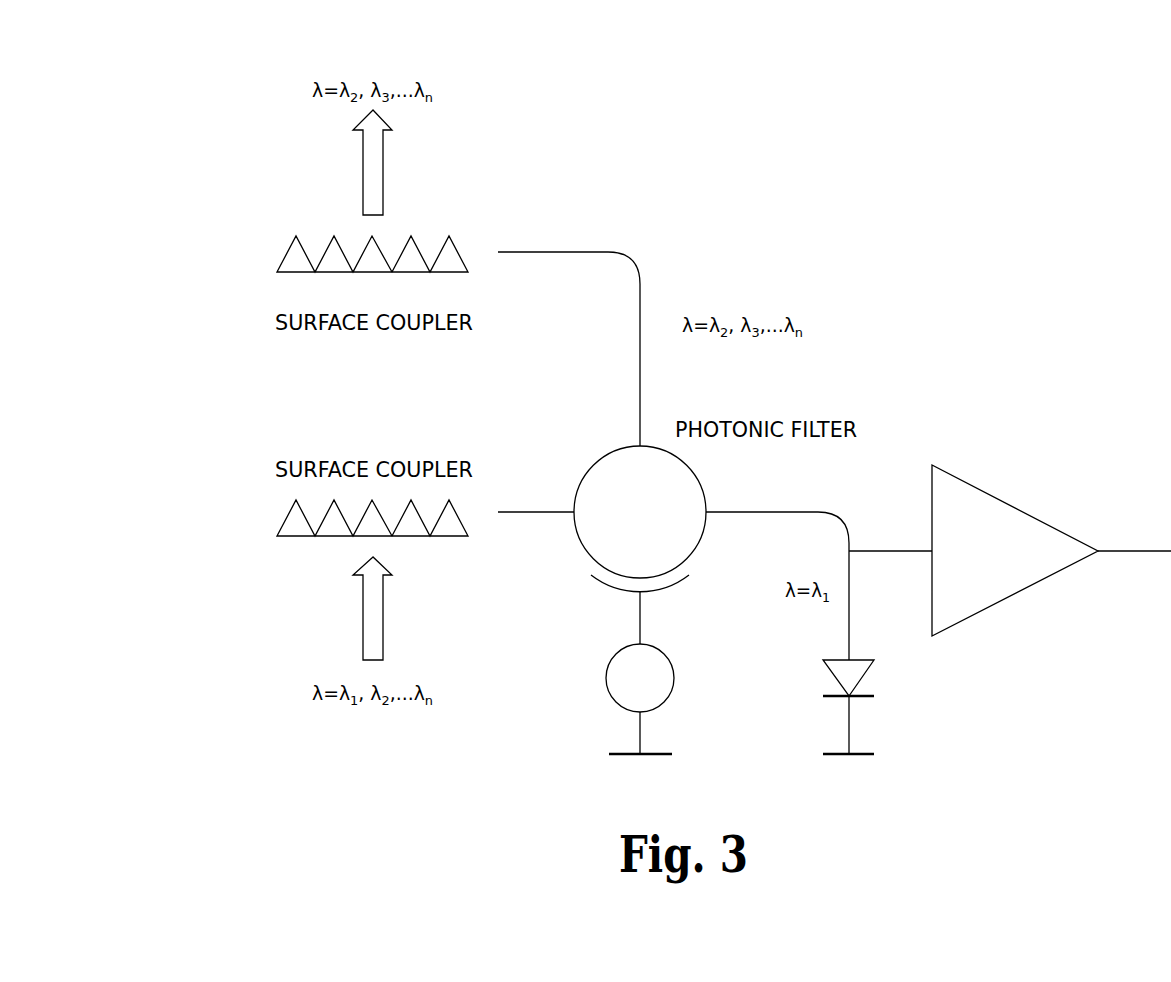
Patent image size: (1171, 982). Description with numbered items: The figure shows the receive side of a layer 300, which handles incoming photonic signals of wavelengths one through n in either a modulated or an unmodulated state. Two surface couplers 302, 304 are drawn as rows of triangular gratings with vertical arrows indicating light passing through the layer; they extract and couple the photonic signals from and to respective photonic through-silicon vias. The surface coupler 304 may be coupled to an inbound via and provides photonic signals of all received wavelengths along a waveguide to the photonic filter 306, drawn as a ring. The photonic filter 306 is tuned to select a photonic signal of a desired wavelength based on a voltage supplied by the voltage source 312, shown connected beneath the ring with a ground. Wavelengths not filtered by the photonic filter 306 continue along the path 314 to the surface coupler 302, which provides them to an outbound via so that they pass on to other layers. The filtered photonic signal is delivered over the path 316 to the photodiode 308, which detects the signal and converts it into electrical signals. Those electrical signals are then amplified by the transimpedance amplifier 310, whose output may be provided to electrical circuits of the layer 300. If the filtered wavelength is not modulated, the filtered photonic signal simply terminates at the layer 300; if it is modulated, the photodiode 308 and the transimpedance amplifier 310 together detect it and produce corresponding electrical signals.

The receive side of a layer 300 is at (895, 92).
The surface coupler 302 is at (285, 252).
The surface coupler 304 is at (285, 517).
The photonic filter 306 is at (582, 478).
The photodiode 308 is at (860, 680).
The transimpedance amplifier (TIA) 310 is at (1057, 573).
The voltage source 312 is at (607, 678).
The path 314 is at (536, 252).
The path 316 is at (773, 512).